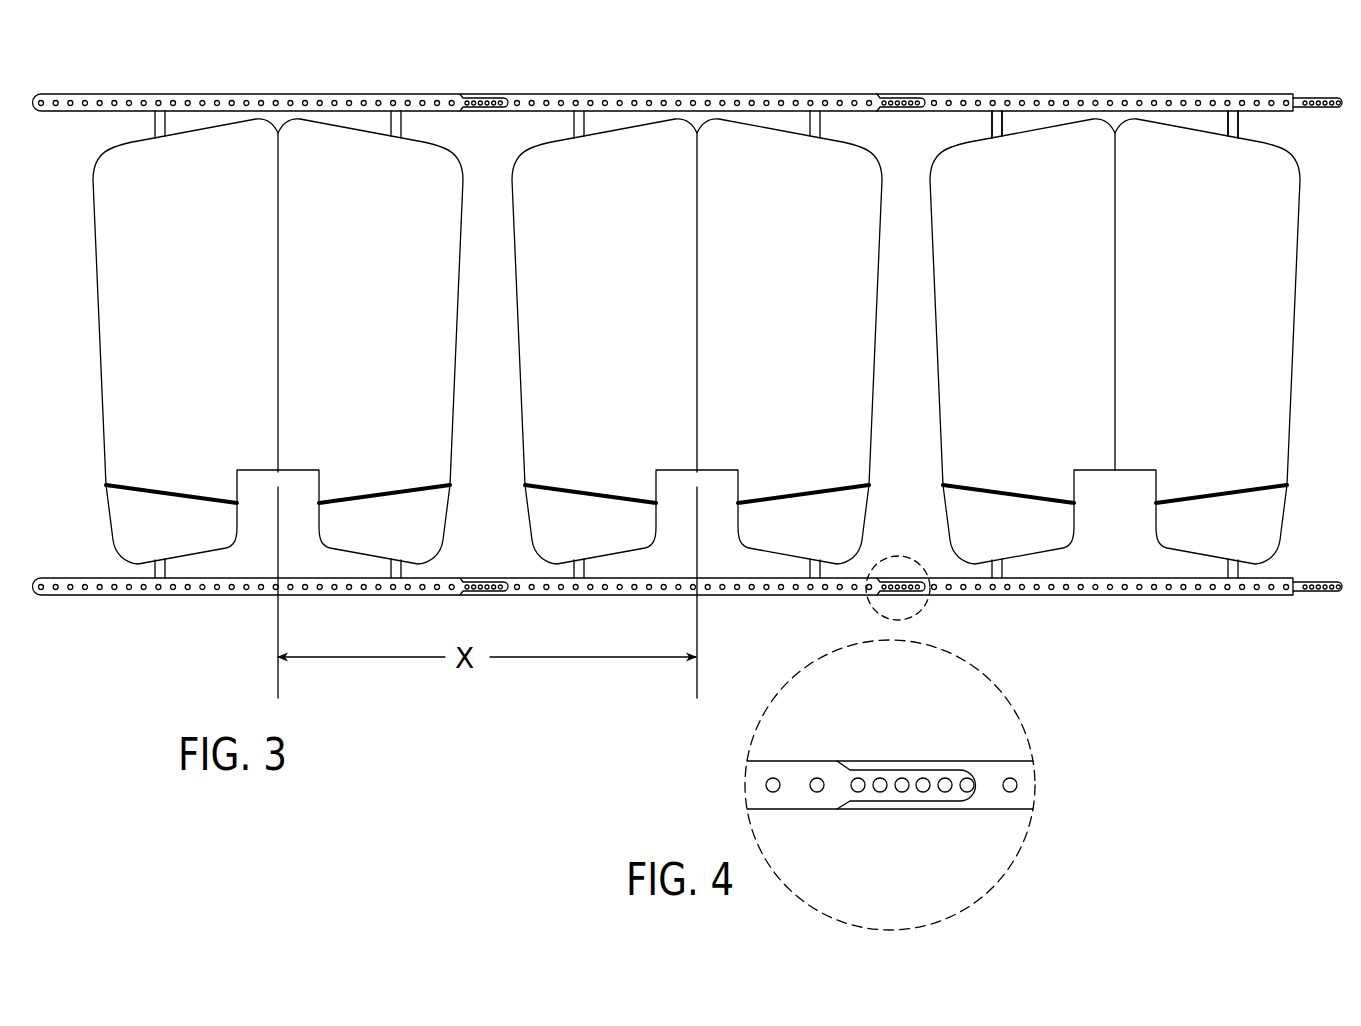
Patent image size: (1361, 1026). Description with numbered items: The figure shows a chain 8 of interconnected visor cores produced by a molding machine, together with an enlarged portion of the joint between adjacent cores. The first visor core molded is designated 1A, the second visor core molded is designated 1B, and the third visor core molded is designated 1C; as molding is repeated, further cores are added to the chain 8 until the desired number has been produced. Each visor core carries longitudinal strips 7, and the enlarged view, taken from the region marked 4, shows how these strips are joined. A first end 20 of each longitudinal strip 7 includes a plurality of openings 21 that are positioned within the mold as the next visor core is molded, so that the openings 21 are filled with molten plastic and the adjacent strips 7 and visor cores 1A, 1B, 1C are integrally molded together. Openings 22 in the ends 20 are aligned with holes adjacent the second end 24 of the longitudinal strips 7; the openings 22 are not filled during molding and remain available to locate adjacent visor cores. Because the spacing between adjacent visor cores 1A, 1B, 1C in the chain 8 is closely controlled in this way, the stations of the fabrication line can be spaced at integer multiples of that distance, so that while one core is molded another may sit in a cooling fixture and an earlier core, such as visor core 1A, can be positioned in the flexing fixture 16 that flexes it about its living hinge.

In FIG. 3, the first visor core 1A is at (116, 374).
In FIG. 3, the second visor core 1B is at (541, 333).
In FIG. 3, the third visor core 1C is at (961, 348).
In FIG. 3, the flexing fixture 16 is at (1046, 138).
In FIG. 3, the longitudinal strip 7 is at (1190, 96).
In FIG. 3, the chain of interconnected visor cores 8 is at (1087, 602).
In FIG. 3, the first end of longitudinal strip 20 is at (1320, 111).
In FIG. 4, the first end of longitudinal strip 20 is at (958, 776).
In FIG. 3, the detail region of FIG. 4 is at (919, 612).
In FIG. 4, the openings 21 is at (882, 803).
In FIG. 4, the openings 22 is at (943, 768).
In FIG. 4, the second end of longitudinal strip 24 is at (995, 803).